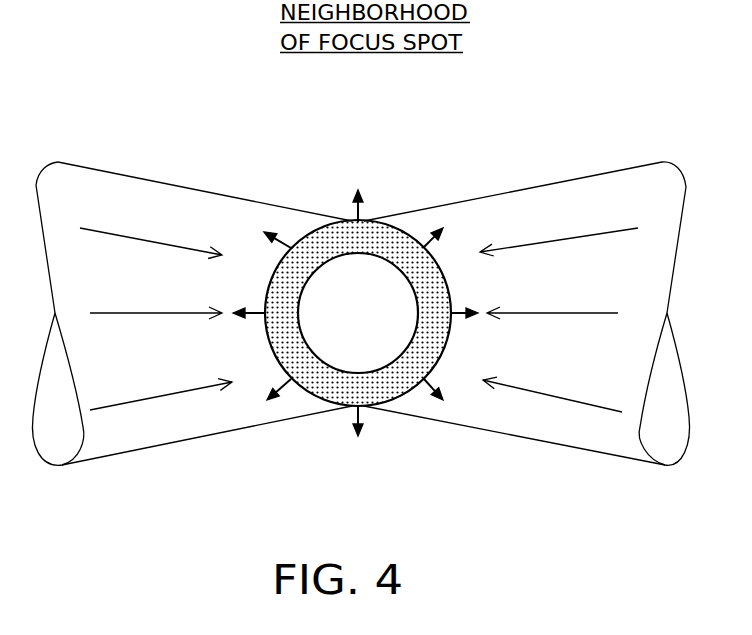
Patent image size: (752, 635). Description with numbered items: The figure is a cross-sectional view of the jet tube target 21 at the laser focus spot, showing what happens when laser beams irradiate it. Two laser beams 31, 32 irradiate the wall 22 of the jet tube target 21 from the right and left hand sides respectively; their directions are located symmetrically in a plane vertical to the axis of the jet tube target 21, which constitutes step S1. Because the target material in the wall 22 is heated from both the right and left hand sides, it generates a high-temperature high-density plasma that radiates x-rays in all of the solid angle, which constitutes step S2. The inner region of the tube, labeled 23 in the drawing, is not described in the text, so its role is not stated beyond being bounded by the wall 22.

The jet tube target 21 is at (313, 222).
The wall 22 is at (390, 224).
The core of optical fiber 23 is at (337, 327).
The laser beam 31 is at (93, 203).
The laser beam 32 is at (567, 202).
The step S1 is at (133, 402).
The step S2 is at (365, 408).